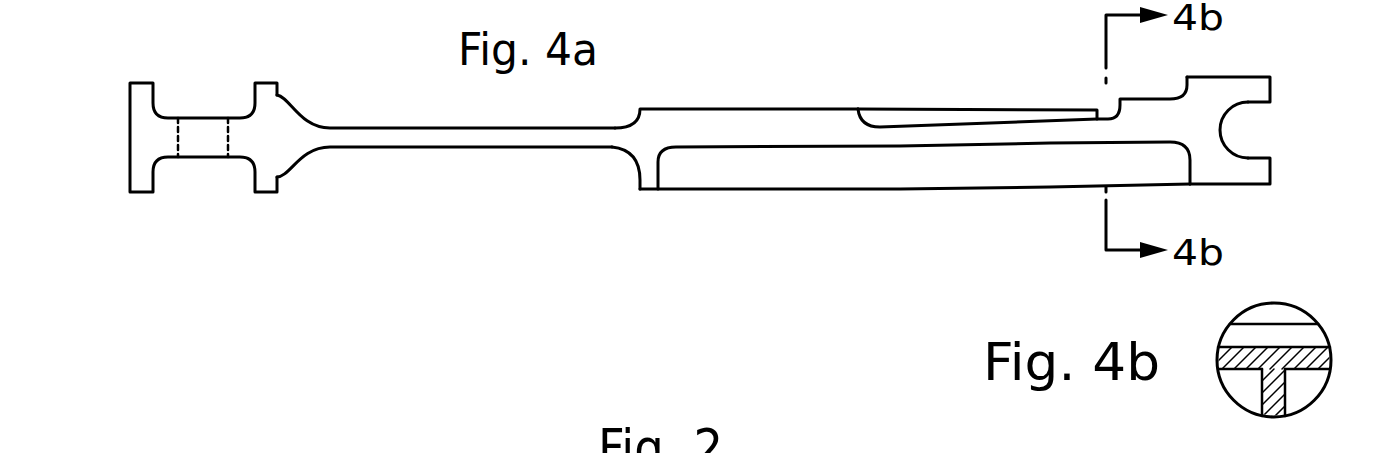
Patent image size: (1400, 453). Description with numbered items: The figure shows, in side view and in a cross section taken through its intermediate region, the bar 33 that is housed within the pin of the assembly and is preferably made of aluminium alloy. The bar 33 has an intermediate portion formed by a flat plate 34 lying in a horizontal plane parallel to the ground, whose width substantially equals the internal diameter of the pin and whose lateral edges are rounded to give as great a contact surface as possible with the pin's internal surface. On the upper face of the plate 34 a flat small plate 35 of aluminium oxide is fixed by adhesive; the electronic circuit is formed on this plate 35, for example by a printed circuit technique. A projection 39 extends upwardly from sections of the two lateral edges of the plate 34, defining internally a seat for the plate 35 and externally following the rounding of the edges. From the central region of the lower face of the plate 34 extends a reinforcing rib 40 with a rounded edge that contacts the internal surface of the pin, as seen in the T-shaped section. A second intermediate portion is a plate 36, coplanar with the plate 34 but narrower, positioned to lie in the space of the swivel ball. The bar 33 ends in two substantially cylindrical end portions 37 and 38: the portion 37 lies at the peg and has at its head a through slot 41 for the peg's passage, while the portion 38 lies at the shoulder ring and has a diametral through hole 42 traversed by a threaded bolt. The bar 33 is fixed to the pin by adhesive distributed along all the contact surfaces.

In FIG. 4A, the bar 33 is at (932, 93).
In FIG. 4B, the bar 33 is at (1334, 315).
In FIG. 4A, the flat plate 34 is at (938, 133).
In FIG. 4B, the flat plate 34 is at (1330, 357).
In FIG. 4A, the flat small plate 35 is at (1043, 115).
In FIG. 4A, the plate 36 is at (393, 138).
In FIG. 4A, the cylindrical end portion 37 is at (1212, 100).
In FIG. 4A, the cylindrical end portion 38 is at (154, 128).
In FIG. 4A, the projection 39 is at (700, 128).
In FIG. 4A, the reinforcing rib 40 is at (770, 163).
In FIG. 4B, the reinforcing rib 40 is at (1262, 382).
In FIG. 4A, the through slot 41 is at (1228, 128).
In FIG. 4A, the diametral through hole 42 is at (216, 132).